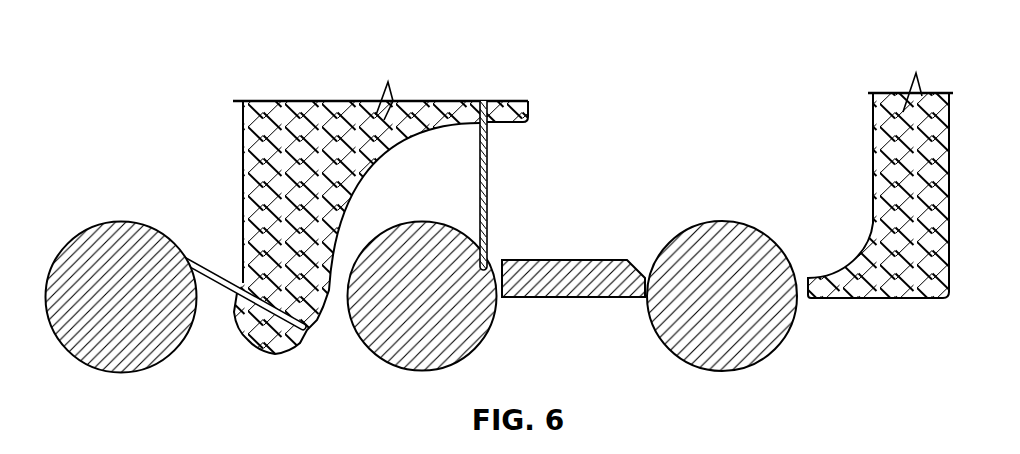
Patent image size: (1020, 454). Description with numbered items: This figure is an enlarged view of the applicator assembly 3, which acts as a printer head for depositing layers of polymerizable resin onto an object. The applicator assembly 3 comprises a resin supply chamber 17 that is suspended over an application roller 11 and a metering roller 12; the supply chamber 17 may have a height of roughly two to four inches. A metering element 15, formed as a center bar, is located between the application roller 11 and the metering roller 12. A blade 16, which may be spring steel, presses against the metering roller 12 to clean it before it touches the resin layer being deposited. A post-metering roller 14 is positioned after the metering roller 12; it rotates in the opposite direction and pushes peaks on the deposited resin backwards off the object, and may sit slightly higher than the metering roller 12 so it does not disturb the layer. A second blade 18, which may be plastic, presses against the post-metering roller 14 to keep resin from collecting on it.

The applicator assembly 3 is at (132, 67).
The application roller 11 is at (710, 309).
The metering roller 12 is at (408, 309).
The post-metering roller 14 is at (107, 308).
The metering element 15 is at (559, 291).
The blade 16 is at (483, 188).
The supply chamber 17 is at (659, 155).
The second blade 18 is at (195, 261).